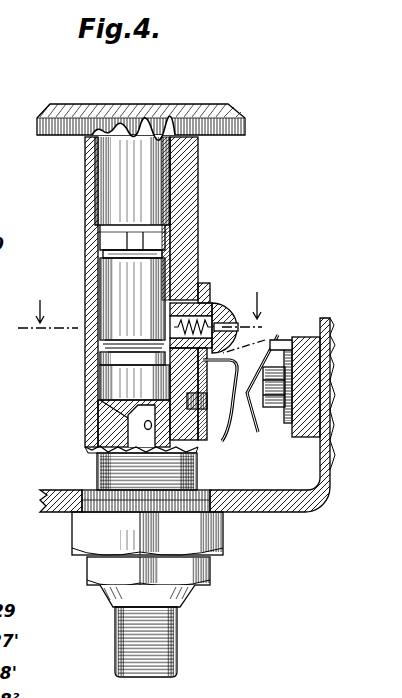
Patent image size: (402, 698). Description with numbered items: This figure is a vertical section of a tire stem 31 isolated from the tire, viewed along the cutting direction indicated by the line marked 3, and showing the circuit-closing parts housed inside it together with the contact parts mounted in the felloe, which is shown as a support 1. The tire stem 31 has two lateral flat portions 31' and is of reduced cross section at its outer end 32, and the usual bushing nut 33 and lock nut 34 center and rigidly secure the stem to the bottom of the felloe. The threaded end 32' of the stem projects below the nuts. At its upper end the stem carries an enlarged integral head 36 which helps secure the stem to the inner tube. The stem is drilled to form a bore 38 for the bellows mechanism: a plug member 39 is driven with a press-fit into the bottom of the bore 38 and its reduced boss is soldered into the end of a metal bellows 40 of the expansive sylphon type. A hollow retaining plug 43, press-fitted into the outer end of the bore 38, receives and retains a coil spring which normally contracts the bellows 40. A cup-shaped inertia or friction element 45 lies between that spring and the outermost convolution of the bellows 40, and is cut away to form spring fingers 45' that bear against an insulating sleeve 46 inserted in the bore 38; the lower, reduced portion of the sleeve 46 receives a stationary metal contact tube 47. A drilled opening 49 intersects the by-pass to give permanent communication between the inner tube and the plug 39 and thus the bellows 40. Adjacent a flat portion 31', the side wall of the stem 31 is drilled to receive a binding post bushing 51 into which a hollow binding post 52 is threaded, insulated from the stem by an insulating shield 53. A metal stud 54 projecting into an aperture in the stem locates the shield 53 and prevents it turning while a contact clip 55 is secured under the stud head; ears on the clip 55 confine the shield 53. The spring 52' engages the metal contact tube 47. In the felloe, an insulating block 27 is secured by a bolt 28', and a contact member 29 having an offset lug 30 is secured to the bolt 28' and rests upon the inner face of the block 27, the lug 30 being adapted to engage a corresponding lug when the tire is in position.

The supporting plate 1 is at (297, 512).
The insulating block 27 is at (297, 415).
The bolt 28' is at (275, 403).
The contact member 29 is at (282, 338).
The offset lug 30 is at (255, 428).
The tire stem 31 is at (202, 288).
The lateral flat portions 31' is at (67, 292).
The reduced cross section outer end 32 is at (124, 471).
The threaded stem 32' is at (172, 642).
The bushing nut 33 is at (75, 531).
The lock nut 34 is at (95, 573).
The enlarged integral head 36 is at (237, 116).
The bore 38 is at (118, 409).
The plug member 39 is at (110, 388).
The metal bellows 40 is at (100, 357).
The hollow retaining plug 43 is at (128, 130).
The cup-shaped inertia or friction element 45 is at (102, 237).
The spring fingers 45' is at (94, 248).
The insulating sleeve 46 is at (102, 341).
The stationary metal contact tube 47 is at (112, 282).
The drilled opening 49 is at (144, 425).
The binding post bushing 51 is at (186, 300).
The hollow binding post 52 is at (240, 281).
The spring 52' is at (253, 307).
The insulating shield 53 is at (200, 312).
The metal stud 54 is at (203, 440).
The contact clip 55 is at (228, 425).
The section line 3 is at (147, 322).